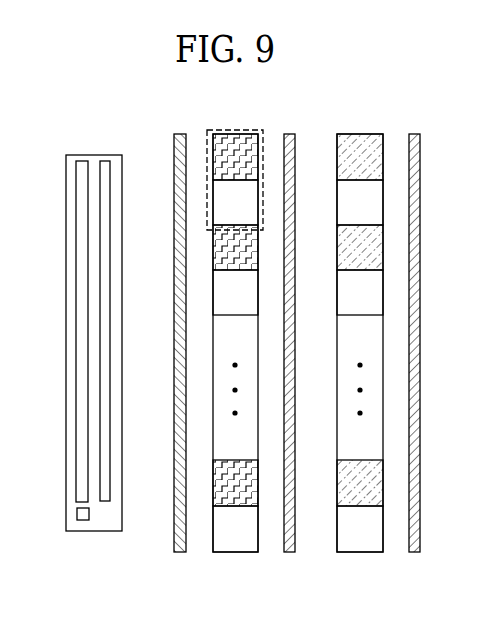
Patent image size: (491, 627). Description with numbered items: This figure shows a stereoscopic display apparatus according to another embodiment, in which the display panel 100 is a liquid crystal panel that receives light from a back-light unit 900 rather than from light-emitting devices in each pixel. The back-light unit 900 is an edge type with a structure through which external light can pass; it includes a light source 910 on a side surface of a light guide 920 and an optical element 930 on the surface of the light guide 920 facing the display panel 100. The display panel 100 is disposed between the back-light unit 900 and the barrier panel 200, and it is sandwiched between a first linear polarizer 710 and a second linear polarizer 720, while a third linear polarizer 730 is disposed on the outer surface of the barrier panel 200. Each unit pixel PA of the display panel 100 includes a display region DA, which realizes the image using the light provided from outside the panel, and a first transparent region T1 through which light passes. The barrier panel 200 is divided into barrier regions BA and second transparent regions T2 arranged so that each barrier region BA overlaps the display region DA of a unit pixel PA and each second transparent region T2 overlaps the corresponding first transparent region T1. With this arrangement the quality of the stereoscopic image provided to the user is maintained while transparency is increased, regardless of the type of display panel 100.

The back-light unit 900 is at (92, 155).
The light source 910 is at (83, 521).
The light guide 920 is at (77, 491).
The optical element 930 is at (110, 496).
The first linear polarizer 710 is at (180, 553).
The display panel 100 is at (235, 366).
The second linear polarizer 720 is at (290, 553).
The barrier panel 200 is at (360, 366).
The third linear polarizer 730 is at (415, 553).
The unit pixel PA is at (233, 130).
The display region DA is at (244, 495).
The first transparent region T1 is at (244, 540).
The barrier region BA is at (369, 495).
The second transparent region T2 is at (369, 540).